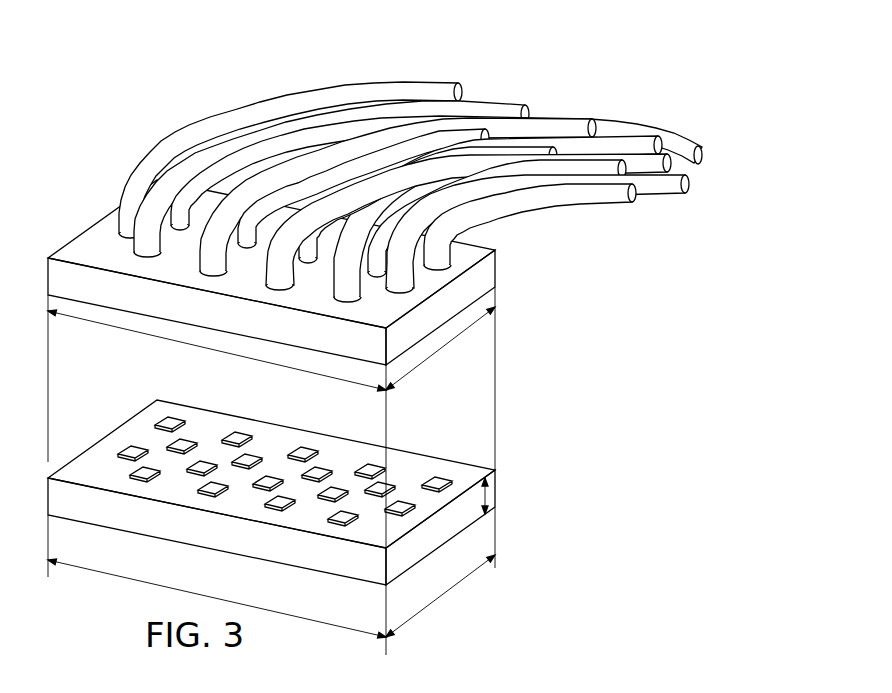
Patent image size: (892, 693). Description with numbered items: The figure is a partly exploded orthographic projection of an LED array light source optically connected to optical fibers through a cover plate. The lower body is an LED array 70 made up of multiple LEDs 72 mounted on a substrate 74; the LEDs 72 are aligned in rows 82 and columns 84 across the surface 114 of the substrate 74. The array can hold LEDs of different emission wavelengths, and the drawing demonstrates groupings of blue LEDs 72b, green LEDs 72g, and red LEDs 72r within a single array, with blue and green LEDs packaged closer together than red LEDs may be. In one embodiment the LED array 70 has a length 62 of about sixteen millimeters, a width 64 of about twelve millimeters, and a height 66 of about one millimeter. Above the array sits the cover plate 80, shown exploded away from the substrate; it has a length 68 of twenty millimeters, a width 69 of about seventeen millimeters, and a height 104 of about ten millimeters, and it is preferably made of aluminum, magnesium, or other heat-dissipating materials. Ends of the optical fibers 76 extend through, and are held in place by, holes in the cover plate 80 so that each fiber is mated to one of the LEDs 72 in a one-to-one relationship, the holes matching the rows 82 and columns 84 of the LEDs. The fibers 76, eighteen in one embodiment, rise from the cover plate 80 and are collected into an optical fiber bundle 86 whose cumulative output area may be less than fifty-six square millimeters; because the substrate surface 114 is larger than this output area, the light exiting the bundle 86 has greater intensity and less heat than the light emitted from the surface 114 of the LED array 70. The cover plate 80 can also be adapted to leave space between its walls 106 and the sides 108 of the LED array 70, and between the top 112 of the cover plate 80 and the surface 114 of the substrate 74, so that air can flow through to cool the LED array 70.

The length 62 is at (271, 524).
The width 64 is at (442, 598).
The height 66 is at (497, 497).
The length 68 is at (187, 343).
The width 69 is at (460, 337).
The LED array 70 is at (271, 493).
The LEDs 72 is at (285, 493).
The red LEDs 72r is at (335, 493).
The green LEDs 72g is at (317, 475).
The blue LEDs 72b is at (268, 480).
The substrate 74 is at (365, 573).
The optical fibers 76 is at (253, 100).
The cover plate 80 is at (296, 357).
The rows 82 is at (155, 422).
The columns 84 is at (317, 510).
The optical fiber bundle 86 is at (410, 188).
The height 104 is at (497, 261).
The walls 106 is at (82, 277).
The sides 108 is at (327, 560).
The top 112 is at (100, 233).
The surface 114 is at (468, 473).